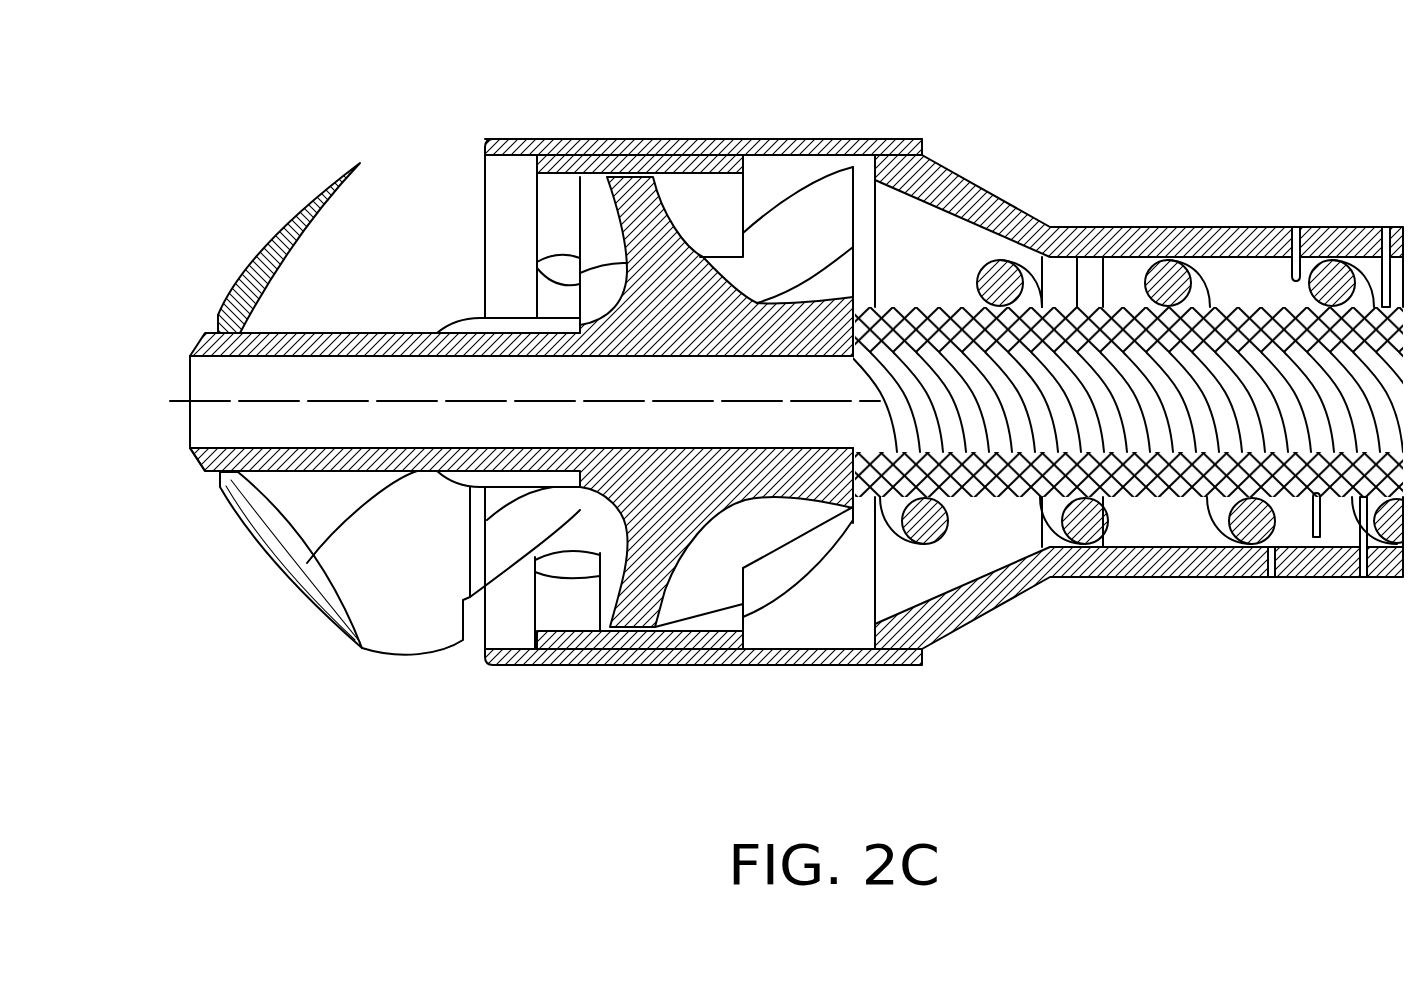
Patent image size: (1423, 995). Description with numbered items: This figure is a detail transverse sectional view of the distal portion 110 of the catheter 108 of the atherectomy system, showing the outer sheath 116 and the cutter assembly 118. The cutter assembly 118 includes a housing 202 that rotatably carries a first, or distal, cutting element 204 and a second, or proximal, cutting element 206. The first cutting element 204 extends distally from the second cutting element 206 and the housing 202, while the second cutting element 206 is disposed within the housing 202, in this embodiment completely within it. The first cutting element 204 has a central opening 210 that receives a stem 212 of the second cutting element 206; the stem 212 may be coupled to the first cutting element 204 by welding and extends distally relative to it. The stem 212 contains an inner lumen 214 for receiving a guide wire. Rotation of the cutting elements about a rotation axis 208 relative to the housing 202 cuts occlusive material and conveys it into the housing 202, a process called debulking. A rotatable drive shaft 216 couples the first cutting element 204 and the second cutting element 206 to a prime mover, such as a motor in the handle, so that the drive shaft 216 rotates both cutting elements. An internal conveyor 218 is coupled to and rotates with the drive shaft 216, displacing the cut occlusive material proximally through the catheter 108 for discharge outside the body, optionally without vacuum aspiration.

The distal portion 110 is at (808, 82).
The housing 202 is at (620, 139).
The cutter assembly 118 is at (733, 139).
The catheter 108 is at (1240, 227).
The outer sheath 116 is at (1320, 227).
The stem 212 is at (200, 335).
The inner lumen 214 is at (190, 385).
The rotation axis 208 is at (183, 418).
The central opening 210 is at (195, 458).
The first cutting element 204 is at (273, 567).
The second cutting element 206 is at (640, 625).
The drive shaft 216 is at (1172, 495).
The internal conveyor 218 is at (1252, 540).